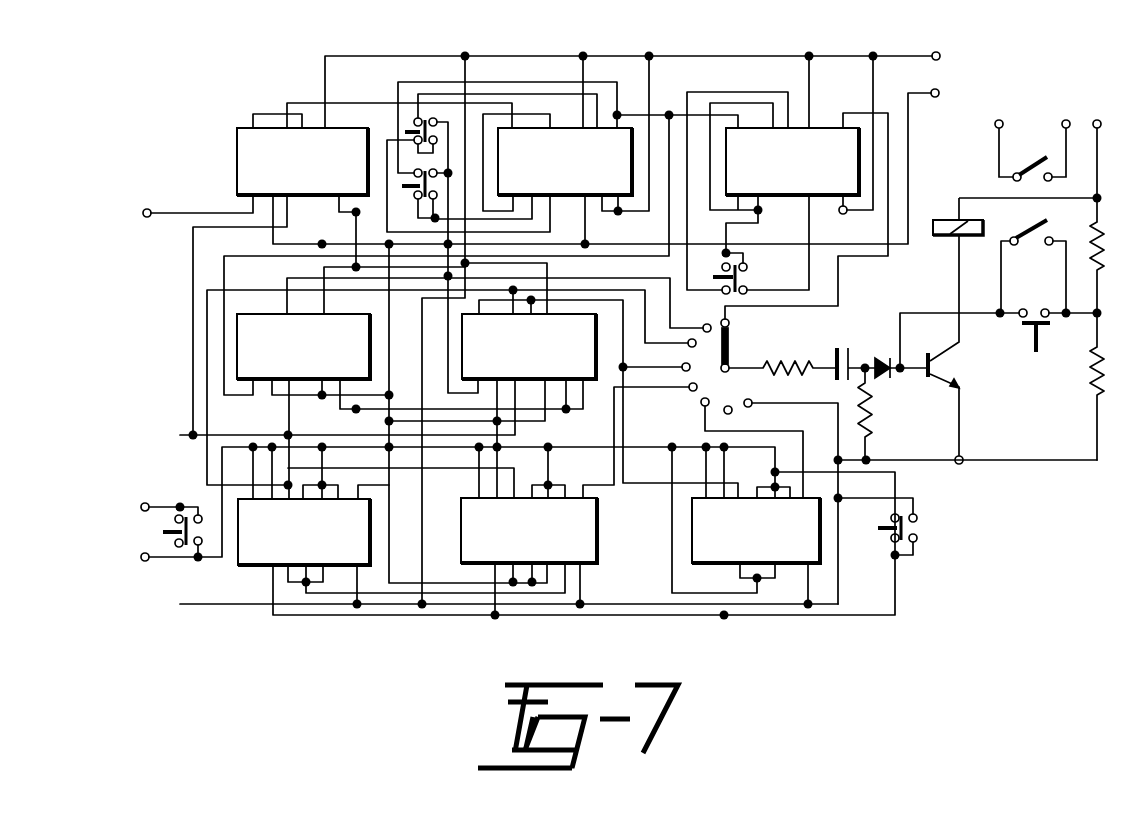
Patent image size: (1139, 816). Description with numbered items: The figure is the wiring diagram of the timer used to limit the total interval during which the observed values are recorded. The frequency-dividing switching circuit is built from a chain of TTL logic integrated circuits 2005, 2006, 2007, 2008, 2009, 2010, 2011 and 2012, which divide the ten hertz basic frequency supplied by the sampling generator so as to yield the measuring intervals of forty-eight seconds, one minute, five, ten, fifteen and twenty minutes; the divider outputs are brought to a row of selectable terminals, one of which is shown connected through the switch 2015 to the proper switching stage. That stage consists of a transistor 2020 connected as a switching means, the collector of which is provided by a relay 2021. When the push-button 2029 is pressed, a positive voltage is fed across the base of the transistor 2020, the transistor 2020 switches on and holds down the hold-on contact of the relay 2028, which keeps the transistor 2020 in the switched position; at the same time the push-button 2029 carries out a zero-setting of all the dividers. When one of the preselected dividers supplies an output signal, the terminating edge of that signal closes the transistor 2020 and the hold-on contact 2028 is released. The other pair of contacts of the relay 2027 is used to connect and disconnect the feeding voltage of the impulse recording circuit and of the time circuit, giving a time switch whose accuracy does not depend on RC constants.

The TTL logic integrated circuit 2005 is at (302, 161).
The TTL logic integrated circuit 2006 is at (565, 161).
The TTL logic integrated circuit 2007 is at (792, 161).
The TTL logic integrated circuit 2008 is at (303, 346).
The TTL logic integrated circuit 2009 is at (529, 346).
The TTL logic integrated circuit 2010 is at (304, 532).
The TTL logic integrated circuit 2011 is at (529, 530).
The TTL logic integrated circuit 2012 is at (756, 530).
The thermostat switch 2015 is at (798, 349).
The transistor 2020 is at (945, 345).
The relay 2021 is at (1011, 205).
The contacts of the relay 2027 is at (1032, 150).
The hold-on contact of the relay 2028 is at (1033, 251).
The push-button 2029 is at (1033, 349).